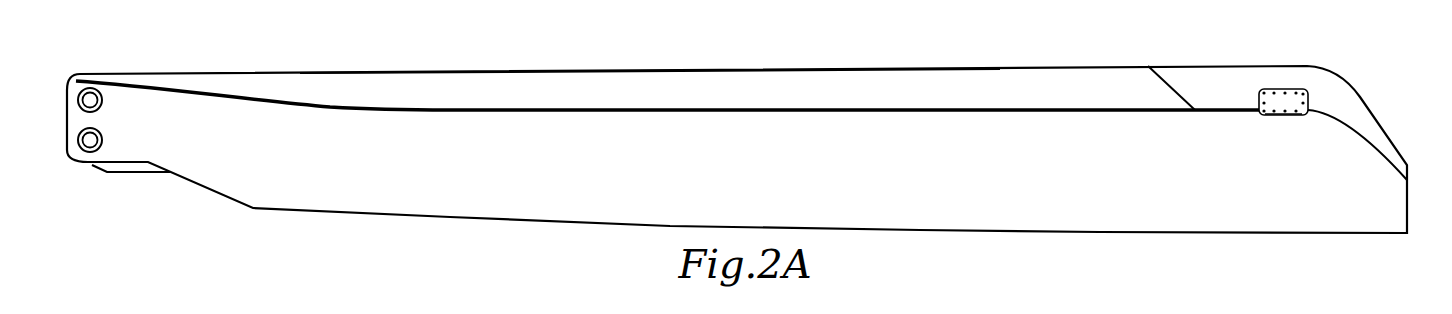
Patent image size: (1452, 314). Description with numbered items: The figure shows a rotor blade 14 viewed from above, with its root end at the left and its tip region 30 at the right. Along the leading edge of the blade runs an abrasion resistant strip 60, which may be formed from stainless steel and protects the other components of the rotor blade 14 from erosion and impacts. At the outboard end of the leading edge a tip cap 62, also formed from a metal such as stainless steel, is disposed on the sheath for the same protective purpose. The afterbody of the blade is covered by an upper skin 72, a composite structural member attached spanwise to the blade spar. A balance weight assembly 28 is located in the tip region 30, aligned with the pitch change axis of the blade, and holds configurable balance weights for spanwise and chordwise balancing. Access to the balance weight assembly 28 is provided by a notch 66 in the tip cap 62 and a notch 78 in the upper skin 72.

The rotor blade 14 is at (1133, 233).
The abrasion resistant strip 60 is at (718, 80).
The tip cap 62 is at (1207, 80).
The notch 66 is at (1280, 90).
The balance weight assembly 28 is at (1302, 97).
The tip region 30 is at (1357, 93).
The upper skin 72 is at (826, 192).
The notch 78 is at (1280, 116).